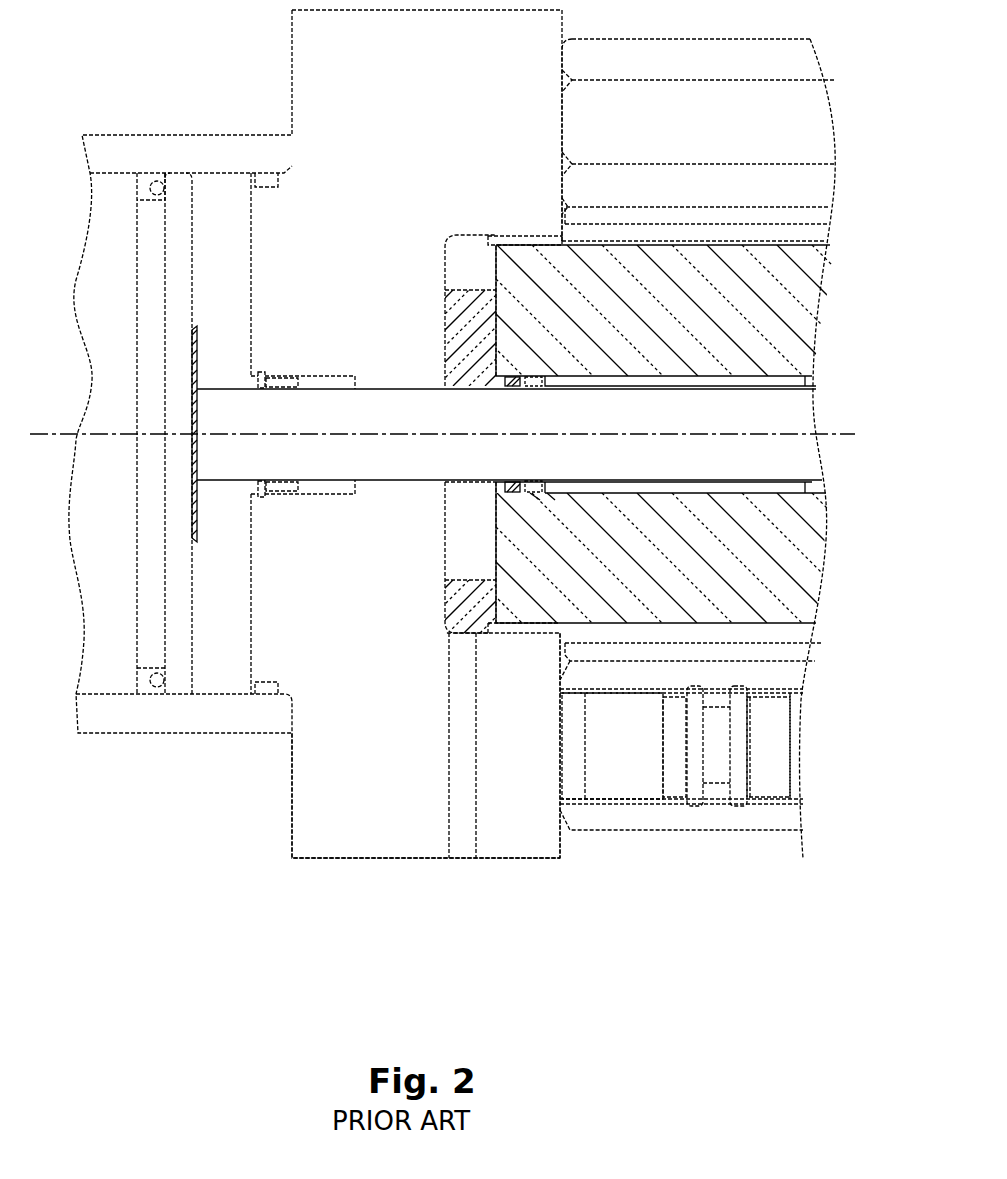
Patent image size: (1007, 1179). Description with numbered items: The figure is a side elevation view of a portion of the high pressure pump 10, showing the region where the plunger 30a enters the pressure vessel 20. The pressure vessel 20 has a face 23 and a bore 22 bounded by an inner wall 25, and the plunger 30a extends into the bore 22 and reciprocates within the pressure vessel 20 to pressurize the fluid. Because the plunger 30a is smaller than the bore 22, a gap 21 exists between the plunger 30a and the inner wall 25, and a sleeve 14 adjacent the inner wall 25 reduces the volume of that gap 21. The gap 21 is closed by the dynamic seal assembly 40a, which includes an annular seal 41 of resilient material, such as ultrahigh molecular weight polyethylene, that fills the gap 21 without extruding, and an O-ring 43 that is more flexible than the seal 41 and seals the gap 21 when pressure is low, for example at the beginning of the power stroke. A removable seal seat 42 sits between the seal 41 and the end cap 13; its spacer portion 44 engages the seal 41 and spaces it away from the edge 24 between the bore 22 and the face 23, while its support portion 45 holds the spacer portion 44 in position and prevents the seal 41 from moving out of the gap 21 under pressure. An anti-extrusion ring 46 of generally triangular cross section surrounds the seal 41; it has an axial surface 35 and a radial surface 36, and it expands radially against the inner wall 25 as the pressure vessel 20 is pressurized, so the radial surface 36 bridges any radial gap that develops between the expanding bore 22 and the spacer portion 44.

The high pressure pump 10 is at (584, 886).
The end cap 13 is at (375, 848).
The sleeve 14 is at (600, 490).
The pressure vessel 20 is at (538, 262).
The gap 21 is at (547, 493).
The bore 22 is at (668, 497).
The face 23 is at (506, 484).
The edge 24 is at (495, 485).
The inner wall 25 is at (540, 376).
The plunger 30a is at (207, 477).
The axial surface 35 is at (493, 580).
The radial surface 36 is at (503, 482).
The dynamic seal assembly 40a is at (426, 348).
The annular seal 41 is at (524, 482).
The seal seat 42 is at (430, 530).
The O-ring 43 is at (530, 493).
The spacer portion 44 is at (506, 432).
The support portion 45 is at (448, 548).
The anti-extrusion ring 46 is at (505, 386).